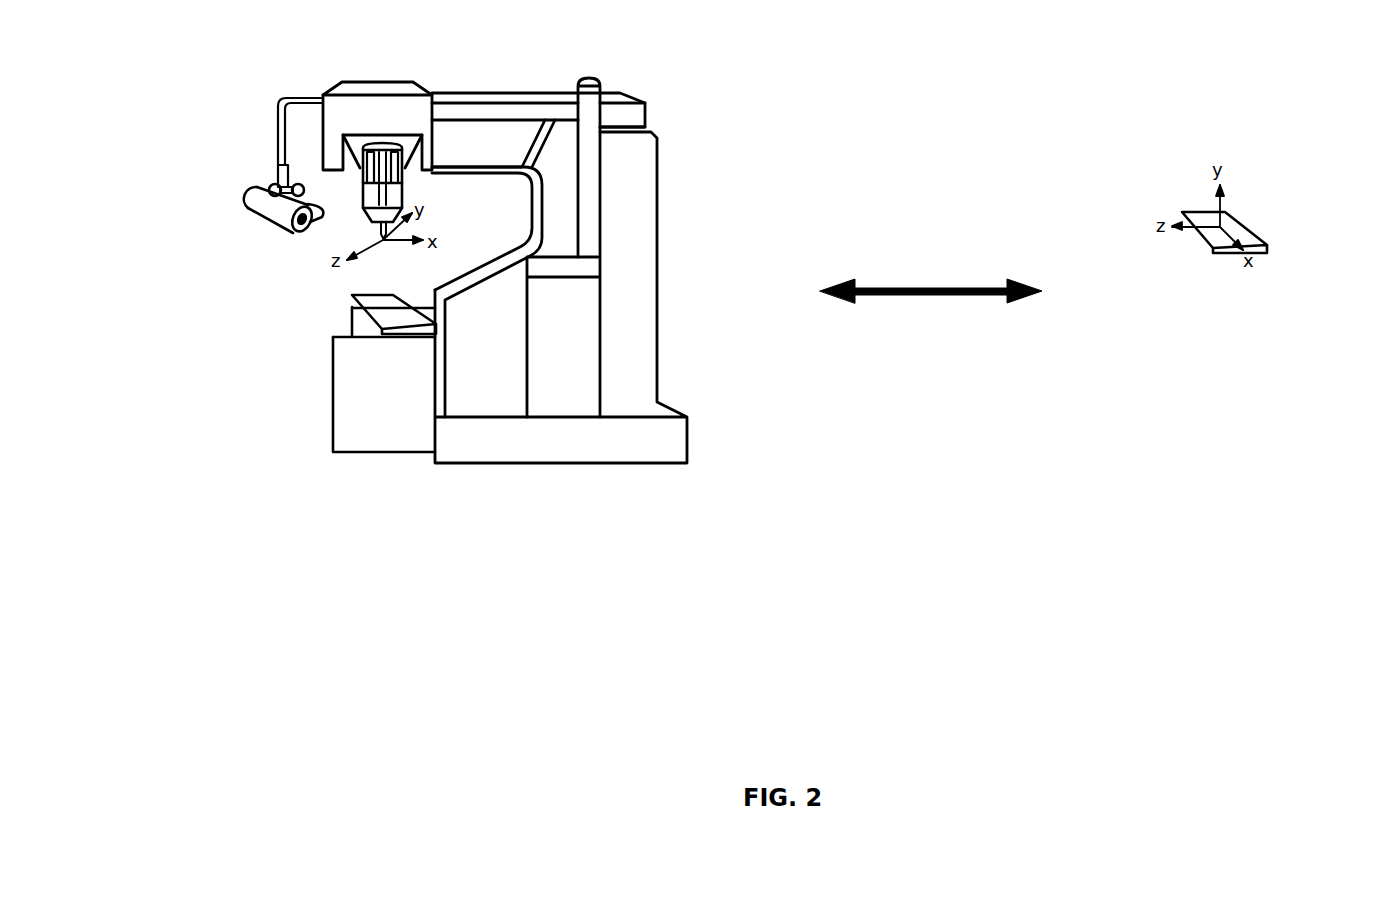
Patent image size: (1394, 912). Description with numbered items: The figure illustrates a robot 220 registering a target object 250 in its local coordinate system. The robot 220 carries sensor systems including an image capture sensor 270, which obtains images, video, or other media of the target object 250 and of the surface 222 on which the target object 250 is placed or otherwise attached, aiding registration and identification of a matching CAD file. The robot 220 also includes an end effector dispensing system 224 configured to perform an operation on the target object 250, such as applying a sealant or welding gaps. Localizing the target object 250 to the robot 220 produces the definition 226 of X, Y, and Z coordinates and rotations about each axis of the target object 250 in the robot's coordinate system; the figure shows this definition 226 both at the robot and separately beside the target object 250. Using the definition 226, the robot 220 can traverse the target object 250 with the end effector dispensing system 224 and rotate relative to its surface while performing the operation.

The robot 220 is at (657, 250).
The surface 222 is at (332, 432).
The end effector dispensing system 224 is at (373, 230).
The definition 226 is at (322, 270).
The target object 250 is at (352, 307).
The image capture sensor 270 is at (278, 215).